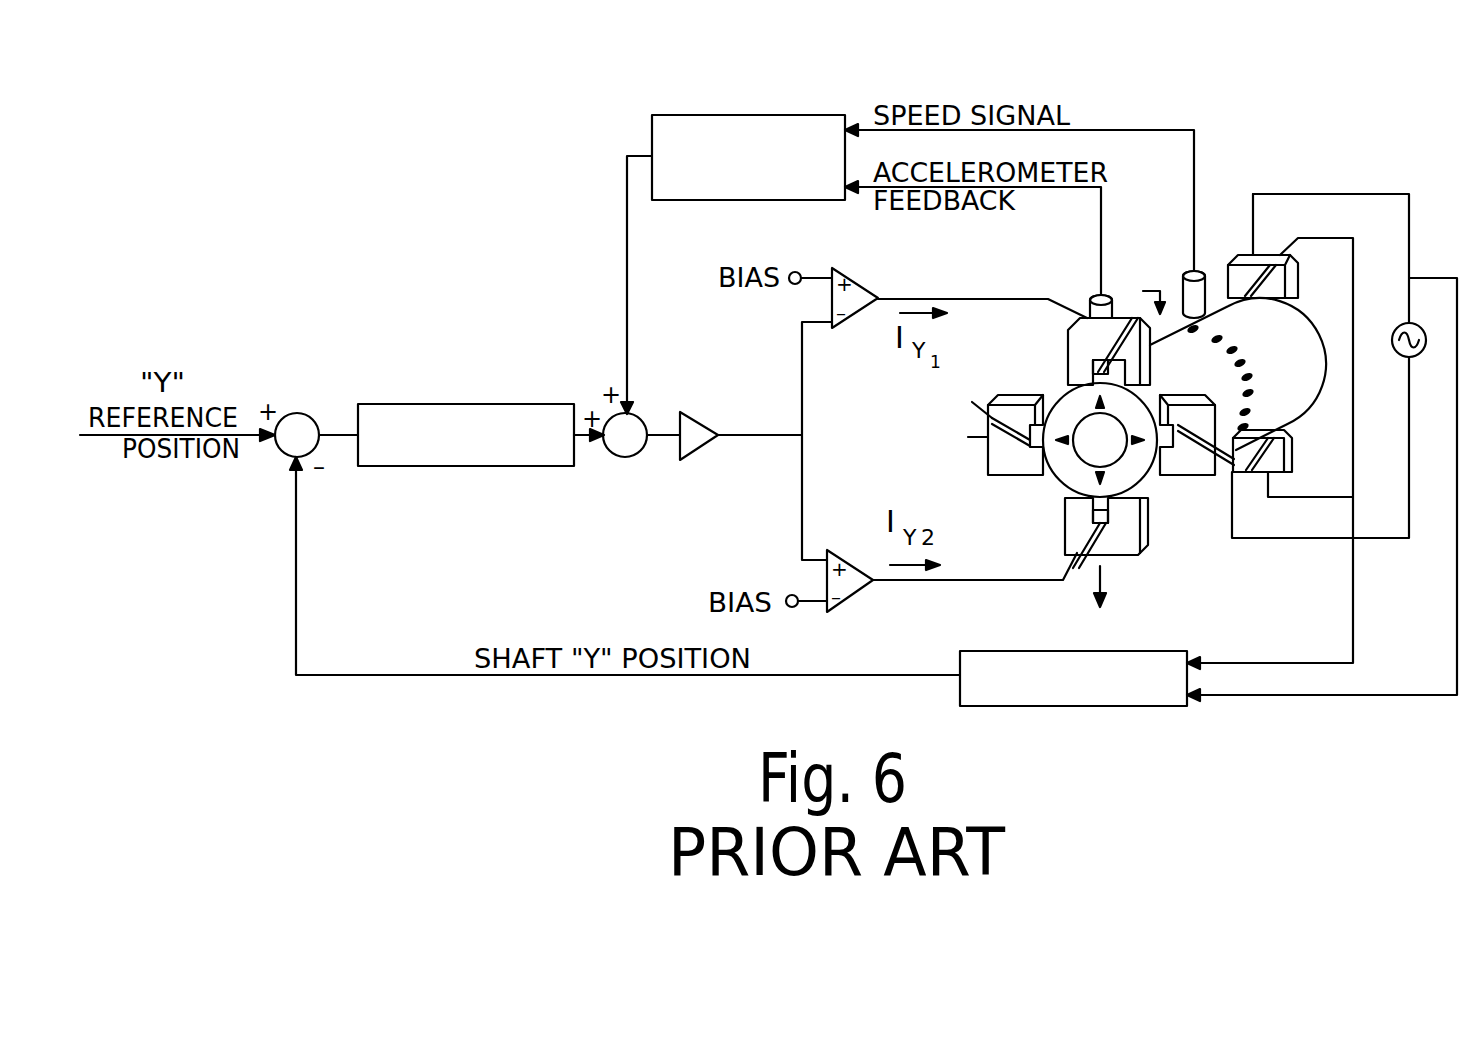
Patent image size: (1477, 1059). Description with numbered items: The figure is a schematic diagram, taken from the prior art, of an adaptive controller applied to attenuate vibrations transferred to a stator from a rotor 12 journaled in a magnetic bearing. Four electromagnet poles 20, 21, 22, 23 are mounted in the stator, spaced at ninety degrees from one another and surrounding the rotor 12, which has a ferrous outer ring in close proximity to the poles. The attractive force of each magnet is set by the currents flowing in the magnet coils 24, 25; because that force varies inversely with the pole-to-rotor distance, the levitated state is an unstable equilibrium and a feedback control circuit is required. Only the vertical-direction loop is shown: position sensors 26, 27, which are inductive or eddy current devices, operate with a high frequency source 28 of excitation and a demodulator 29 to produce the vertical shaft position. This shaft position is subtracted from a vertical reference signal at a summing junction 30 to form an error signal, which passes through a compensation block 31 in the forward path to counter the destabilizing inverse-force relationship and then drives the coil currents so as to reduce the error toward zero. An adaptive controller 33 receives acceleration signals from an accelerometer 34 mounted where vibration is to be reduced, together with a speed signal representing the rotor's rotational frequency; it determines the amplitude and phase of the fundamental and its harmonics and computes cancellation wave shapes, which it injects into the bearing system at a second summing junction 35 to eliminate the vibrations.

The rotor 12 is at (1306, 377).
The electromagnet pole 20 is at (1130, 546).
The electromagnet pole 21 is at (1185, 470).
The electromagnet pole 22 is at (1070, 343).
The electromagnet pole 23 is at (1012, 470).
The magnet coil 24 is at (1118, 312).
The magnet coil 25 is at (1076, 568).
The position sensor 26 is at (1235, 256).
The position sensor 27 is at (1281, 453).
The high frequency source 28 is at (1421, 356).
The demodulator 29 is at (1140, 651).
The summing junction 30 is at (301, 413).
The compensation block 31 is at (466, 404).
The adaptive controller 33 is at (766, 115).
The accelerometer 34 is at (1094, 296).
The summing junction 35 is at (646, 416).